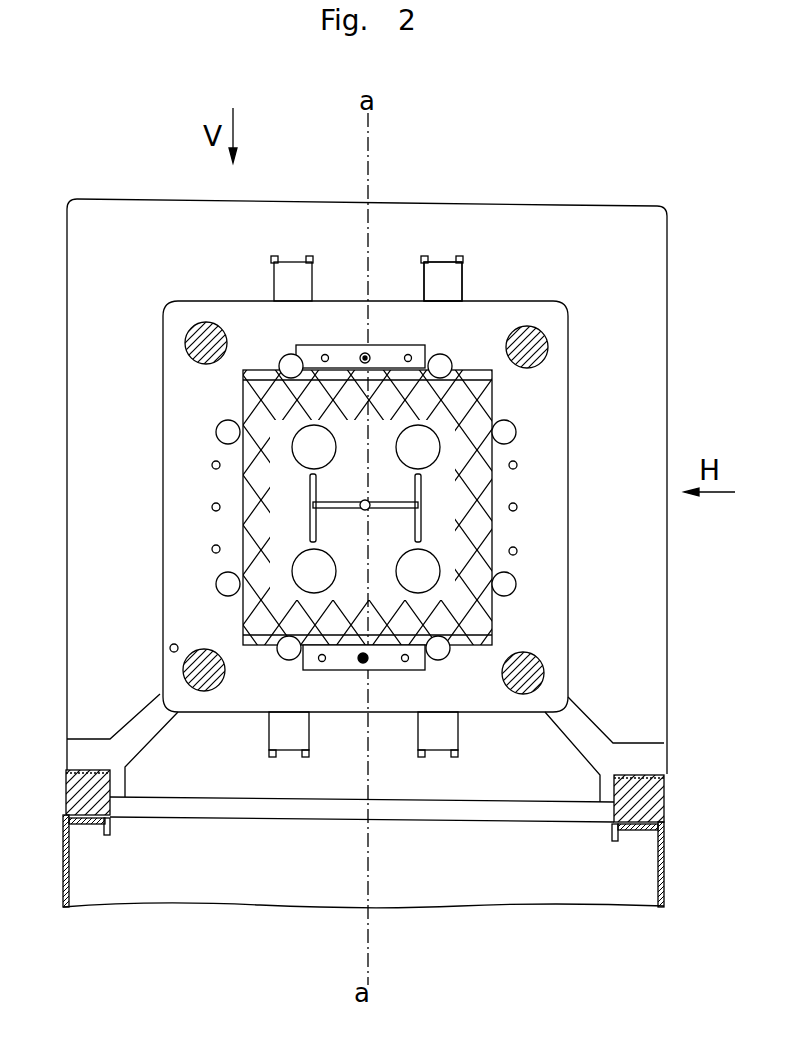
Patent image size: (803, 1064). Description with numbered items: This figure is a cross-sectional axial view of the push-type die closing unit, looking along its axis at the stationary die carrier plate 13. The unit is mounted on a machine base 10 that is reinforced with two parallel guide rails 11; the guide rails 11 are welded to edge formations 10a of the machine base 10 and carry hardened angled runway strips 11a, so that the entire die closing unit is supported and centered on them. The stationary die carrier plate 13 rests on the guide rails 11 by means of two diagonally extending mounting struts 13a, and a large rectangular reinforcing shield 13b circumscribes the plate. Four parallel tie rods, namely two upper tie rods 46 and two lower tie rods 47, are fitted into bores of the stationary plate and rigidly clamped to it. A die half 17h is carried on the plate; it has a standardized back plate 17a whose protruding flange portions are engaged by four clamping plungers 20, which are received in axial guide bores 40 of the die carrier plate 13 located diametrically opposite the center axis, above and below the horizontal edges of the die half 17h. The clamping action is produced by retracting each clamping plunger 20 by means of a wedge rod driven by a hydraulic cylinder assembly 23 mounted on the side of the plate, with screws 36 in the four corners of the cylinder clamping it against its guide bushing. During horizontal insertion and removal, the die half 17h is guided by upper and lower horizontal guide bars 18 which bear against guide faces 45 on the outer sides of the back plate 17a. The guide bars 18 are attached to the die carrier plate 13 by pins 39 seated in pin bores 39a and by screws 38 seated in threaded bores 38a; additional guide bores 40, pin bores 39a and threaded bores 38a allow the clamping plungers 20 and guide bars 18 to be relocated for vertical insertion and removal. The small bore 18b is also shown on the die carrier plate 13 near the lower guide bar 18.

The machine base 10 is at (67, 882).
The edge formations 10a is at (110, 835).
The guide rails 11 is at (80, 796).
The angled runway strips 11a is at (89, 768).
The stationary die carrier plate 13 is at (545, 405).
The mounting struts 13a is at (147, 737).
The reinforcing shield 13b is at (592, 233).
The back plate 17a is at (478, 372).
The die half 17h is at (463, 528).
The guide bars 18 is at (392, 355).
The bore 18b is at (170, 648).
The clamping plungers 20 is at (280, 353).
The hydraulic cylinder assembly 23 is at (441, 283).
The screws 36 is at (459, 257).
The screws 38 is at (363, 353).
The threaded bores 38a is at (212, 507).
The pins 39 is at (323, 354).
The pin bores 39a is at (212, 465).
The guide bores 40 is at (216, 432).
The guide faces 45 is at (317, 647).
The upper tie rods 46 is at (535, 352).
The lower tie rods 47 is at (533, 676).